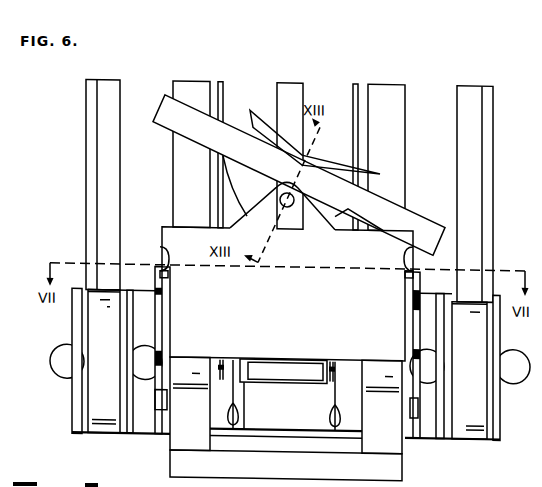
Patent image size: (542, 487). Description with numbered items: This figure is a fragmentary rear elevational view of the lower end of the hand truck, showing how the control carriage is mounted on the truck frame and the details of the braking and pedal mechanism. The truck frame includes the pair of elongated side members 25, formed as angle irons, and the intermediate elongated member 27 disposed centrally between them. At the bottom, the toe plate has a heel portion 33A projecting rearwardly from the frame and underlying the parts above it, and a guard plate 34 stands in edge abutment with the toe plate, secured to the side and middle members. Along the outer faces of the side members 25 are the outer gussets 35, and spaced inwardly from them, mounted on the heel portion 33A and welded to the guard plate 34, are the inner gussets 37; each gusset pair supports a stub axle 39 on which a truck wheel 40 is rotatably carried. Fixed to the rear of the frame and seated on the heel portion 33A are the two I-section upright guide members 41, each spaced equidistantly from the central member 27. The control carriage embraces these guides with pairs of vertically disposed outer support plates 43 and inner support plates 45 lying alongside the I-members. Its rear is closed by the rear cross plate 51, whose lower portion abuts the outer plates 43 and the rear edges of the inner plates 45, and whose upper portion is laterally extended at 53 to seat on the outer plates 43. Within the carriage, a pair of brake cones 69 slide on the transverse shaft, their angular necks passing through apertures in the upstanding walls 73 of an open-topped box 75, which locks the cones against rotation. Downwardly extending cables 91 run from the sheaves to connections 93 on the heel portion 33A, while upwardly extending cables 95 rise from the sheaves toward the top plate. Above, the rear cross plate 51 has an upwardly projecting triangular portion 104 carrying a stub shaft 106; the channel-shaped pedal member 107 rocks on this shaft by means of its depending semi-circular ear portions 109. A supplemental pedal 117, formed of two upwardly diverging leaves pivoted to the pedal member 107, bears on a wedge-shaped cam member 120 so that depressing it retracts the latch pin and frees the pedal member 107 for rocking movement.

The side members 25 is at (88, 142).
The intermediate elongated member 27 is at (288, 85).
The heel portion 33A is at (417, 430).
The guard plate 34 is at (150, 297).
The outer gussets 35 is at (77, 319).
The inner gussets 37 is at (130, 430).
The stub axle 39 is at (122, 355).
The truck wheel 40 is at (110, 346).
The upright guide members 41 is at (190, 87).
The outer support plates 43 is at (165, 419).
The inner support plates 45 is at (213, 404).
The rear cross plate 51 is at (287, 306).
The laterally extended portion 53 is at (162, 253).
The brake cones 69 is at (242, 356).
The upstanding wall 73 is at (325, 365).
The box 75 is at (282, 383).
The downwardly extending cables 91 is at (235, 389).
The connections 93 is at (237, 418).
The upwardly extending cables 95 is at (222, 81).
The triangular portion 104 is at (267, 212).
The stub shaft 106 is at (291, 202).
The pedal member 107 is at (400, 210).
The ear portions 109 is at (250, 174).
The supplemental pedal 117 is at (380, 168).
The wedge-shaped cam member 120 is at (272, 138).